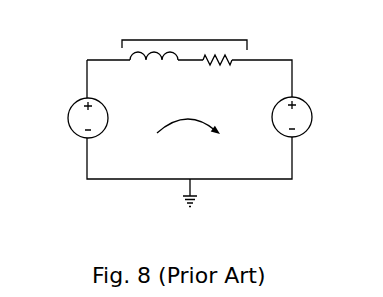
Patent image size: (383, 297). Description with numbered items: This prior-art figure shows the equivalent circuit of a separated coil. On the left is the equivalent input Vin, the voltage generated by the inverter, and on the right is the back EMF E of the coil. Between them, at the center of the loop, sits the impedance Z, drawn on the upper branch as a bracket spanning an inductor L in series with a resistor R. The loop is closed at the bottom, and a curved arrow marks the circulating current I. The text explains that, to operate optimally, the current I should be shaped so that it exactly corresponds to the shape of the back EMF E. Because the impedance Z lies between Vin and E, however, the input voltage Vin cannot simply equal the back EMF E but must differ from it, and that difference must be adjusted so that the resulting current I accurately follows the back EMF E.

The impedance Z is at (184, 35).
The inductor L is at (154, 68).
The resistor R is at (217, 70).
The equivalent input Vin is at (74, 118).
The back EMF E is at (303, 117).
The current I is at (188, 136).